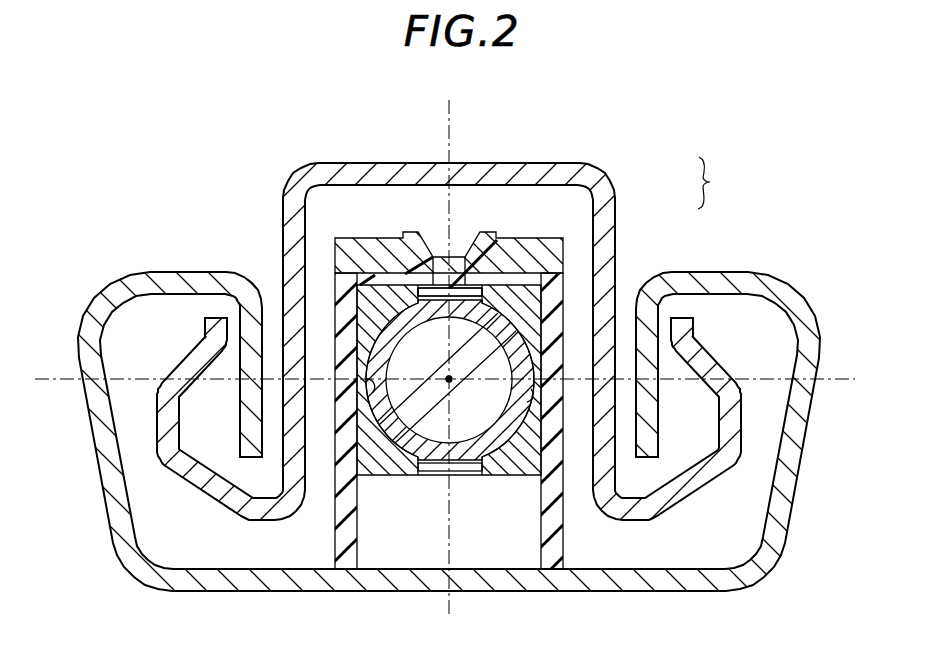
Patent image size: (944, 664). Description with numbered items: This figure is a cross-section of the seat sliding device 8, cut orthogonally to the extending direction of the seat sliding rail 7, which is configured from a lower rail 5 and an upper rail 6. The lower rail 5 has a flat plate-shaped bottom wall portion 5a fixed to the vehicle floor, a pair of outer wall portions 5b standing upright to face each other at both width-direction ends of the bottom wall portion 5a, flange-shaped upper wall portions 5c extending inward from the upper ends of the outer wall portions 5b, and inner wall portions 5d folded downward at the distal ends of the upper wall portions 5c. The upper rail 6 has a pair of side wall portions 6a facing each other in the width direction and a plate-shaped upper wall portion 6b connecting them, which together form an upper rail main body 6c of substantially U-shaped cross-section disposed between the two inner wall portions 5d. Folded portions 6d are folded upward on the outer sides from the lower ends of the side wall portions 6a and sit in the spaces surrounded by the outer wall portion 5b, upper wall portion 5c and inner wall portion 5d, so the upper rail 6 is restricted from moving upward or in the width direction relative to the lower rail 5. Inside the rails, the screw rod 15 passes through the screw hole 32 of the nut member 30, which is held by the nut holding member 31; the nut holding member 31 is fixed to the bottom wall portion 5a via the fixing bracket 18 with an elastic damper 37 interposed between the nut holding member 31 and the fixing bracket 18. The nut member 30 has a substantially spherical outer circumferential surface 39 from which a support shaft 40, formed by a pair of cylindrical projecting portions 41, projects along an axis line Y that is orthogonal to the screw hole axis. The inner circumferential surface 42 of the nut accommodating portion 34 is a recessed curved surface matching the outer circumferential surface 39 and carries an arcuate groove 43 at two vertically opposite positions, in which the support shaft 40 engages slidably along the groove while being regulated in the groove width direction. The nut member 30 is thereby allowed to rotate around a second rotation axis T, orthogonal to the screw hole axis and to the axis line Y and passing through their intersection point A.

The lower rail 5 is at (668, 290).
The bottom wall portion 5a is at (436, 591).
The outer wall portion 5b is at (800, 420).
The upper wall portion 5c is at (718, 274).
The inner wall portion 5d is at (636, 302).
The upper rail 6 is at (612, 196).
The side wall portion 6a is at (614, 222).
The upper wall portion 6b is at (440, 163).
The upper rail main body 6c is at (553, 166).
The folded portion 6d is at (742, 432).
The seat sliding rail 7 is at (712, 183).
The seat sliding device 8 is at (780, 616).
The screw rod 15 is at (492, 452).
The fixing bracket 18 is at (551, 236).
The nut member 30 is at (390, 480).
The nut holding member 31 is at (356, 492).
The screw hole 32 is at (413, 478).
The nut accommodating portion 34 is at (530, 397).
The damper 37 is at (566, 541).
The outer circumferential surface 39 is at (352, 305).
The support shaft 40 is at (462, 471).
The projecting portion 41 is at (450, 292).
The inner circumferential surface 42 is at (392, 285).
The arcuate groove 43 is at (446, 466).
The intersection point A is at (337, 343).
The second rotation axis T is at (858, 379).
The axis line Y is at (453, 106).